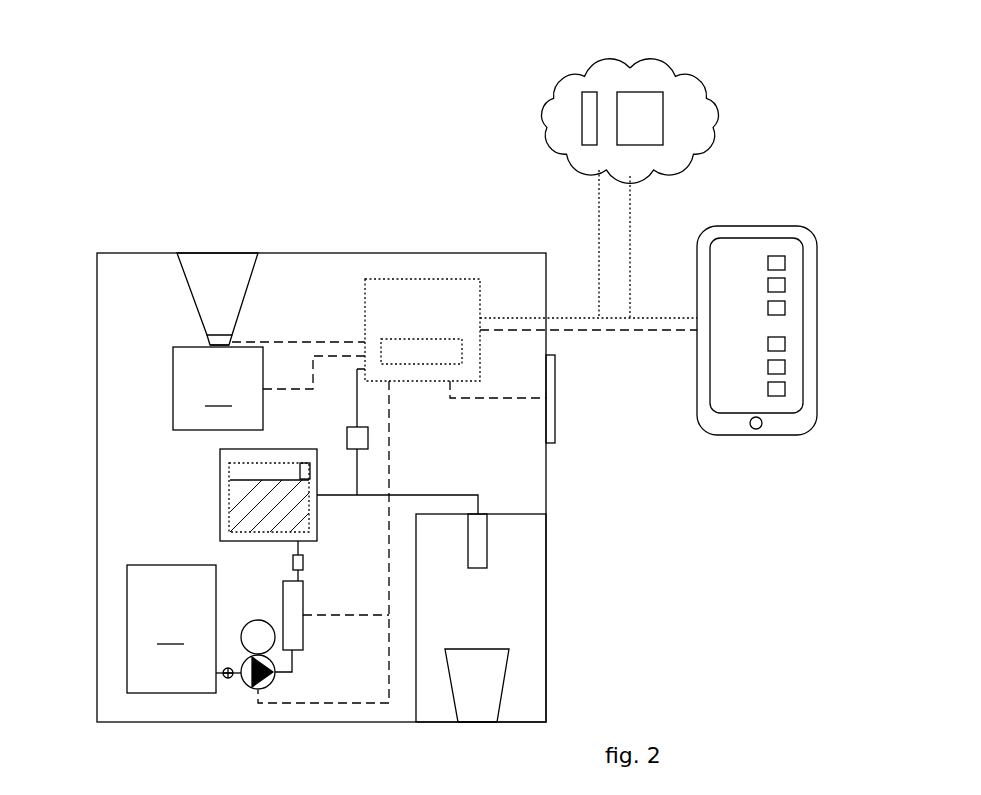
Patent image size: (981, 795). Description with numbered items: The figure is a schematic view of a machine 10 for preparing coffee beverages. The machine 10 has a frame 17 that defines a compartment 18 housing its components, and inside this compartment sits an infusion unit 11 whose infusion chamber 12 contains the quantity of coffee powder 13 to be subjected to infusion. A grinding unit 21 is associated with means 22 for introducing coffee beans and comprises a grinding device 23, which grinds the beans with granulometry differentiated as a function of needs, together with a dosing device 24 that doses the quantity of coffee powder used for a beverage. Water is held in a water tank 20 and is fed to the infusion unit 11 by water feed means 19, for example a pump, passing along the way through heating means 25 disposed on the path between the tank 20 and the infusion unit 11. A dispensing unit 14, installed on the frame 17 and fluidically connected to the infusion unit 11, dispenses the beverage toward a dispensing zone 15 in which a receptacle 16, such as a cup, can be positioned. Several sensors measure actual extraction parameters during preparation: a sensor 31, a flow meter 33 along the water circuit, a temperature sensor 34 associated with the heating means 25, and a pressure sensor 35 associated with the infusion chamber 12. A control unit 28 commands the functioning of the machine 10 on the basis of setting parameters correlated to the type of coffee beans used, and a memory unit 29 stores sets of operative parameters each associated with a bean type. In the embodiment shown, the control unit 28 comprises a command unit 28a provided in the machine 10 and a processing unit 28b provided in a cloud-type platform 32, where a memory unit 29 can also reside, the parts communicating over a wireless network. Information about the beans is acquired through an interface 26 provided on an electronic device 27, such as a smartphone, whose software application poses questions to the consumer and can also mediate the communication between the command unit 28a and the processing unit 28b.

The machine 10 is at (321, 437).
The infusion unit 11 is at (208, 487).
The infusion chamber 12 is at (230, 463).
The coffee powder 13 is at (248, 498).
The dispensing unit 14 is at (489, 540).
The dispensing zone 15 is at (522, 657).
The receptacle 16 is at (481, 693).
The frame 17 is at (309, 251).
The compartment 18 is at (99, 378).
The water feed means 19 is at (246, 675).
The water tank 20 is at (171, 629).
The grinding unit 21 is at (170, 360).
The means for introducing coffee beans 22 is at (224, 276).
The grinding device 23 is at (218, 388).
The dosing device 24 is at (219, 342).
The heating means 25 is at (294, 631).
The interface 26 is at (557, 421).
The electronic device 27 is at (778, 224).
The control unit 28 is at (430, 277).
The command unit 28a is at (449, 306).
The processing unit 28b is at (650, 124).
The memory unit 29 is at (409, 350).
The sensor 31 is at (357, 438).
The cloud-type platform 32 is at (709, 75).
The flow meter 33 is at (228, 667).
The temperature sensor 34 is at (298, 563).
The pressure sensor 35 is at (304, 470).